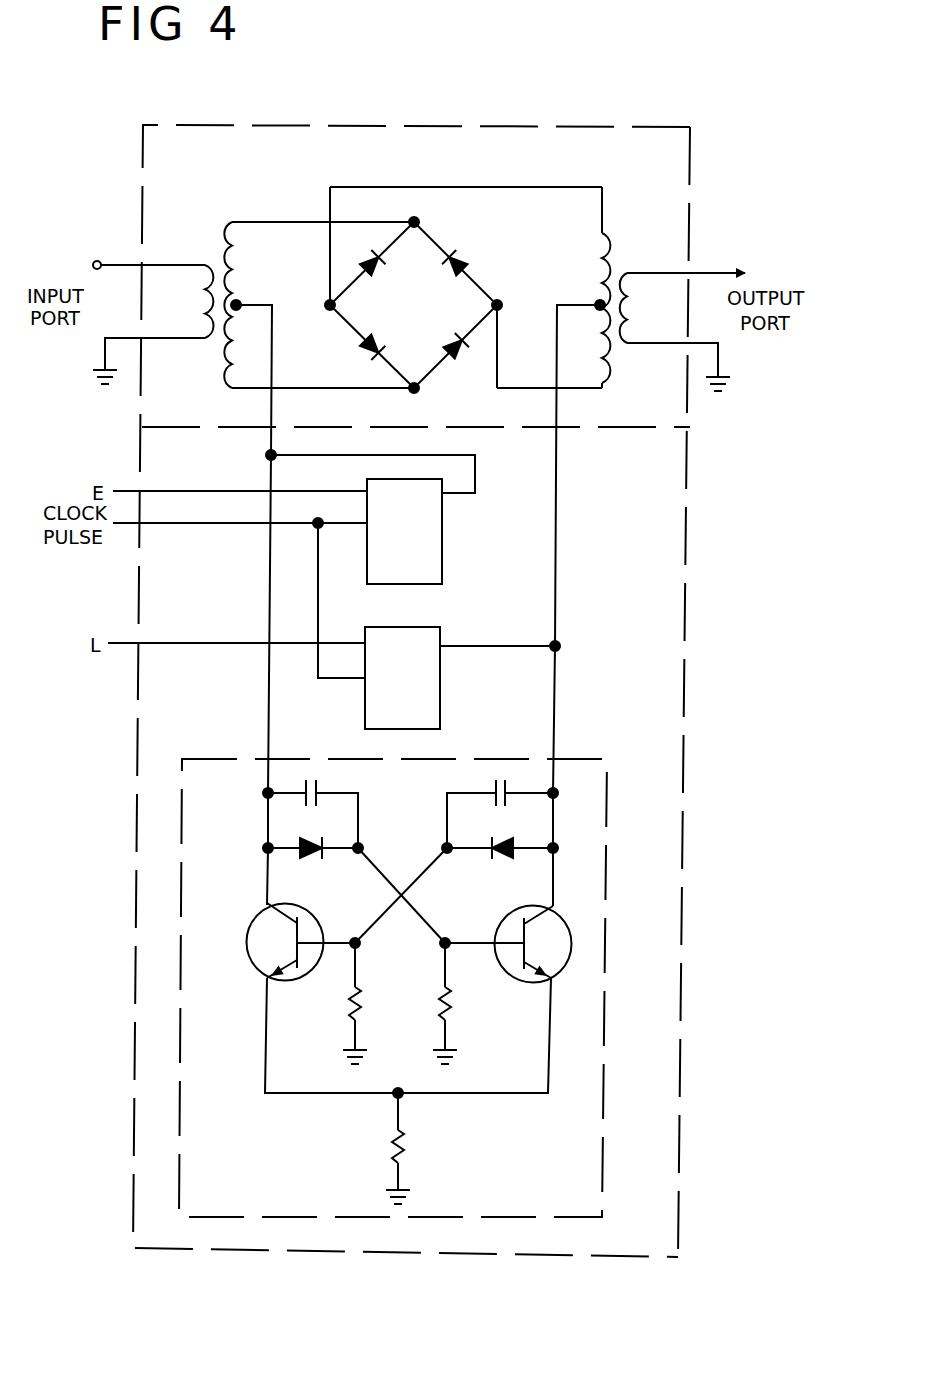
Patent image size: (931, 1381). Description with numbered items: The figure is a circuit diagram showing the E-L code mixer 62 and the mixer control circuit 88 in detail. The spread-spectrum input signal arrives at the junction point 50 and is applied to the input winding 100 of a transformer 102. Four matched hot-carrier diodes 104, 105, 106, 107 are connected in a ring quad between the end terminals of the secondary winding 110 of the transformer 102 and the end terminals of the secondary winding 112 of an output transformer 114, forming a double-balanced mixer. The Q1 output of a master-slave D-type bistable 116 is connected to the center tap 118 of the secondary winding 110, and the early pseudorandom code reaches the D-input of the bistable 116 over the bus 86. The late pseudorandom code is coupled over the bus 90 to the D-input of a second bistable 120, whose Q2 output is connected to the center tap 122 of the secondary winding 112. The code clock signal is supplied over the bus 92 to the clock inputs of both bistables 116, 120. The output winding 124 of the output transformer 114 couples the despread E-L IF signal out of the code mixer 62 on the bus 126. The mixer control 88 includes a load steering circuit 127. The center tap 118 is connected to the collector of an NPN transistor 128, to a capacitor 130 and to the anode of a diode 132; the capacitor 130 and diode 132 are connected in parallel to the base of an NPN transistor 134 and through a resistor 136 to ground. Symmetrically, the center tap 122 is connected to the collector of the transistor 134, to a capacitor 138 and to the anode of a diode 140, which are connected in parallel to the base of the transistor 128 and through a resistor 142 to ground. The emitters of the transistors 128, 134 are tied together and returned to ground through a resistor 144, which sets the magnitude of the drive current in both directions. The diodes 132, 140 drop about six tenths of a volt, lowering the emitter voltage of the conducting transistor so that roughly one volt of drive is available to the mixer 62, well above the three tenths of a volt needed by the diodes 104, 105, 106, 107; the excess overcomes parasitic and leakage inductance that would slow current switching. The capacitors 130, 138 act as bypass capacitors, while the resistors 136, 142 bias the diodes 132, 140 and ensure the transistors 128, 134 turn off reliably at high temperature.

The junction point 50 is at (93, 261).
The E-L code mixer 62 is at (437, 125).
The bus 86 is at (195, 491).
The mixer control circuit 88 is at (685, 553).
The bus 90 is at (185, 643).
The bus 92 is at (195, 523).
The input winding 100 is at (205, 266).
The transformer 102 is at (253, 331).
The hot-carrier diode 104 is at (384, 281).
The hot-carrier diode 105 is at (466, 257).
The hot-carrier diode 106 is at (451, 340).
The hot-carrier diode 107 is at (362, 357).
The secondary winding 110 is at (230, 231).
The secondary winding 112 is at (612, 238).
The output transformer 114 is at (635, 429).
The master-slave D-type bistable 116 is at (442, 557).
The center tap 118 is at (239, 301).
The bistable 120 is at (440, 717).
The center tap 122 is at (597, 302).
The output winding 124 is at (630, 272).
The bus 126 is at (722, 268).
The load steering circuit 127 is at (583, 758).
The NPN transistor 128 is at (248, 950).
The capacitor 130 is at (322, 791).
The diode 132 is at (313, 857).
The NPN transistor 134 is at (519, 982).
The resistor 136 is at (442, 1012).
The capacitor 138 is at (494, 786).
The diode 140 is at (498, 860).
The resistor 142 is at (352, 1012).
The resistor 144 is at (402, 1152).